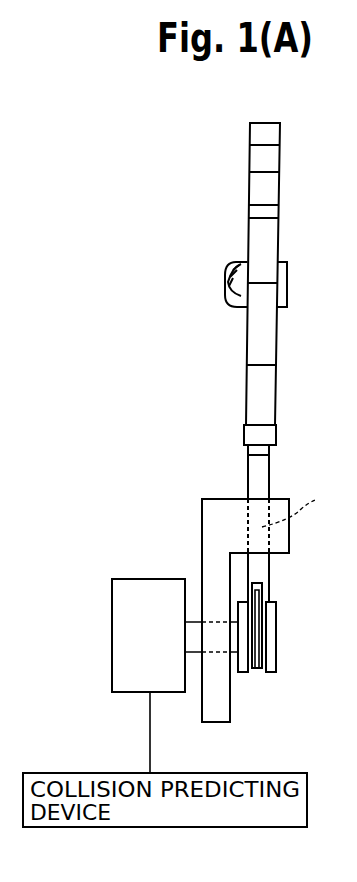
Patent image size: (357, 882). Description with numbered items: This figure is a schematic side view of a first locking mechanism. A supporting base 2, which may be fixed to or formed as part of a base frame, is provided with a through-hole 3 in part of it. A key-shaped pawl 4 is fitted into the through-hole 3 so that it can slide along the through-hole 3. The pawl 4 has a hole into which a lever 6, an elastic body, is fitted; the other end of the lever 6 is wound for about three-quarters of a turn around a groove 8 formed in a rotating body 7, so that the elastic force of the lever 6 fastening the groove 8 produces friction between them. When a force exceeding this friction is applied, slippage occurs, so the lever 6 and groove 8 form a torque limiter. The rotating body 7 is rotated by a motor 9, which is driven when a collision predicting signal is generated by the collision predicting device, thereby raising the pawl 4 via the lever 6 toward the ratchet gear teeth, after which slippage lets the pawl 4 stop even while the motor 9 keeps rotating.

The supporting base 2 is at (227, 498).
The through-hole 3 is at (296, 507).
The pawl 4 is at (262, 478).
The lever 6 is at (258, 592).
The rotating body 7 is at (267, 645).
The groove 8 is at (258, 668).
The motor 9 is at (155, 578).